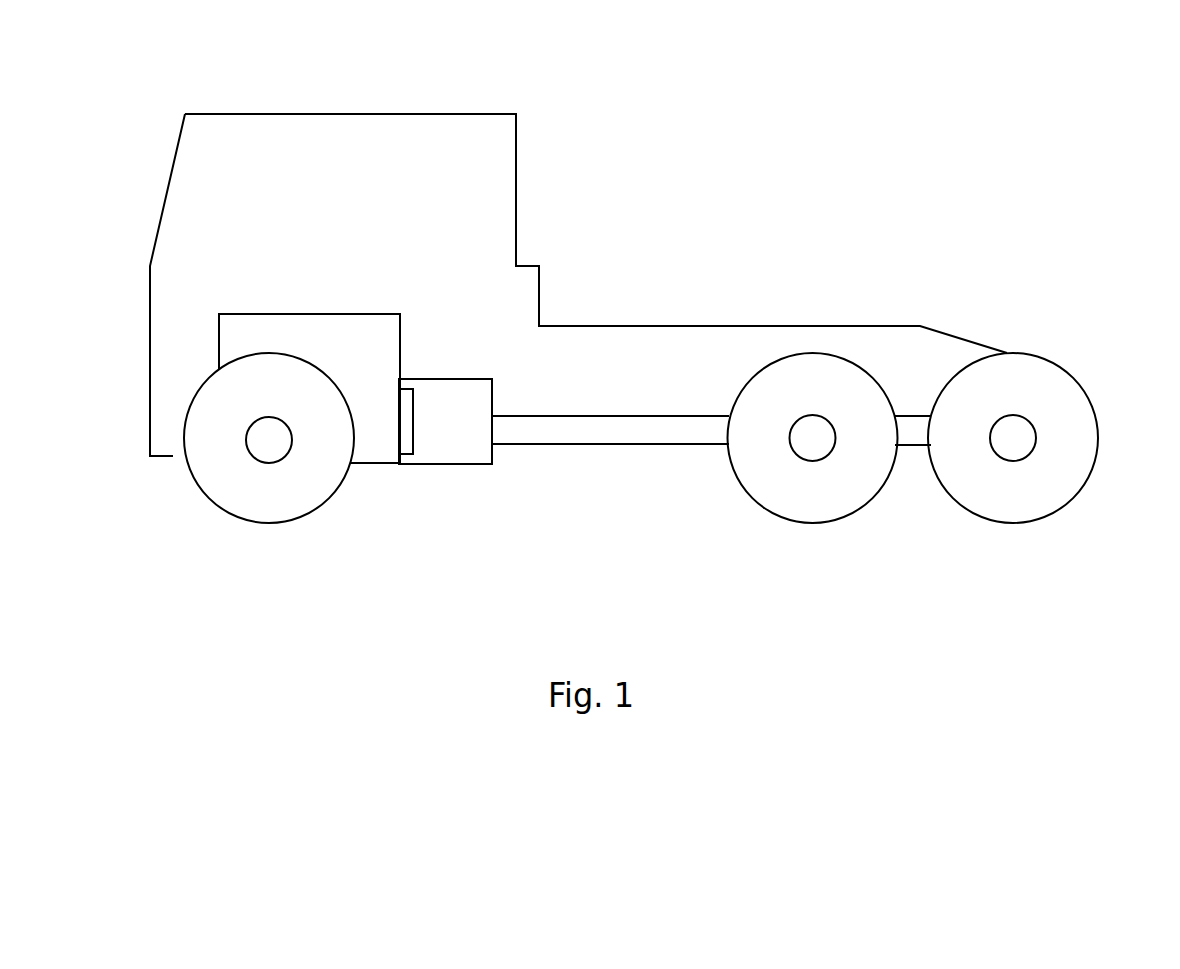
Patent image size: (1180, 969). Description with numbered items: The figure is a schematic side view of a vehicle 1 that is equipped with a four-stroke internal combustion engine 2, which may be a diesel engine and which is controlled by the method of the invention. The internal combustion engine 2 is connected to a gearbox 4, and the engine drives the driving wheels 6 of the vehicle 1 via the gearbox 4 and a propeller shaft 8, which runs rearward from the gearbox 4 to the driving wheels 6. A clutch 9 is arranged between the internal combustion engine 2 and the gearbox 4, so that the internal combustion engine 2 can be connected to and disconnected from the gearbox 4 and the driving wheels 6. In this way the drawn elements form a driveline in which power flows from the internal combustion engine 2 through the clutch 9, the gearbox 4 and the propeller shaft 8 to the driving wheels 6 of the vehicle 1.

The vehicle 1 is at (634, 84).
The internal combustion engine 2 is at (387, 464).
The gearbox 4 is at (442, 464).
The driving wheels 6 is at (858, 510).
The propeller shaft 8 is at (677, 444).
The clutch 9 is at (413, 410).